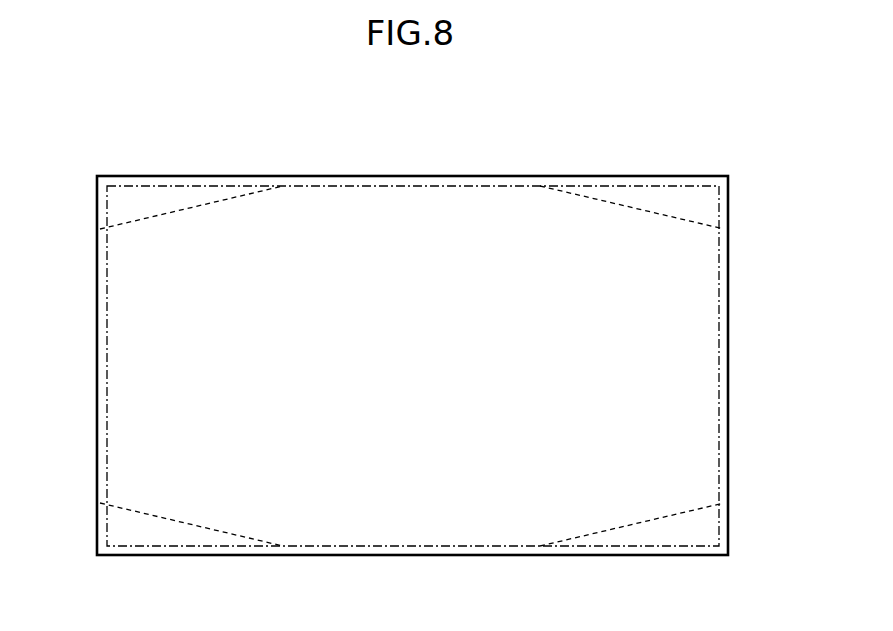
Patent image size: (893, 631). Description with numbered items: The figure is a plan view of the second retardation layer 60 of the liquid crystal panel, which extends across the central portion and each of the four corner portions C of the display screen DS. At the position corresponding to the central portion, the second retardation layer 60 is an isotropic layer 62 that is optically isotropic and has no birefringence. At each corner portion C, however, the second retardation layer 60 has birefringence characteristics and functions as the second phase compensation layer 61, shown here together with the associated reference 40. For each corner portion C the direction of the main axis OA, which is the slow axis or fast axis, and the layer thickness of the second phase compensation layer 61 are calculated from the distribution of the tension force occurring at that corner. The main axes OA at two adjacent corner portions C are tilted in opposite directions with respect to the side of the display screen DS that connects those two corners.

The second retardation layer 60 is at (760, 170).
The second phase compensation layer 61 is at (412, 374).
The light-shielding layer 40 is at (195, 196).
The isotropic layer 62 is at (703, 327).
The display screen DS is at (372, 217).
The main axis OA is at (142, 188).
The corner portion C is at (94, 178).